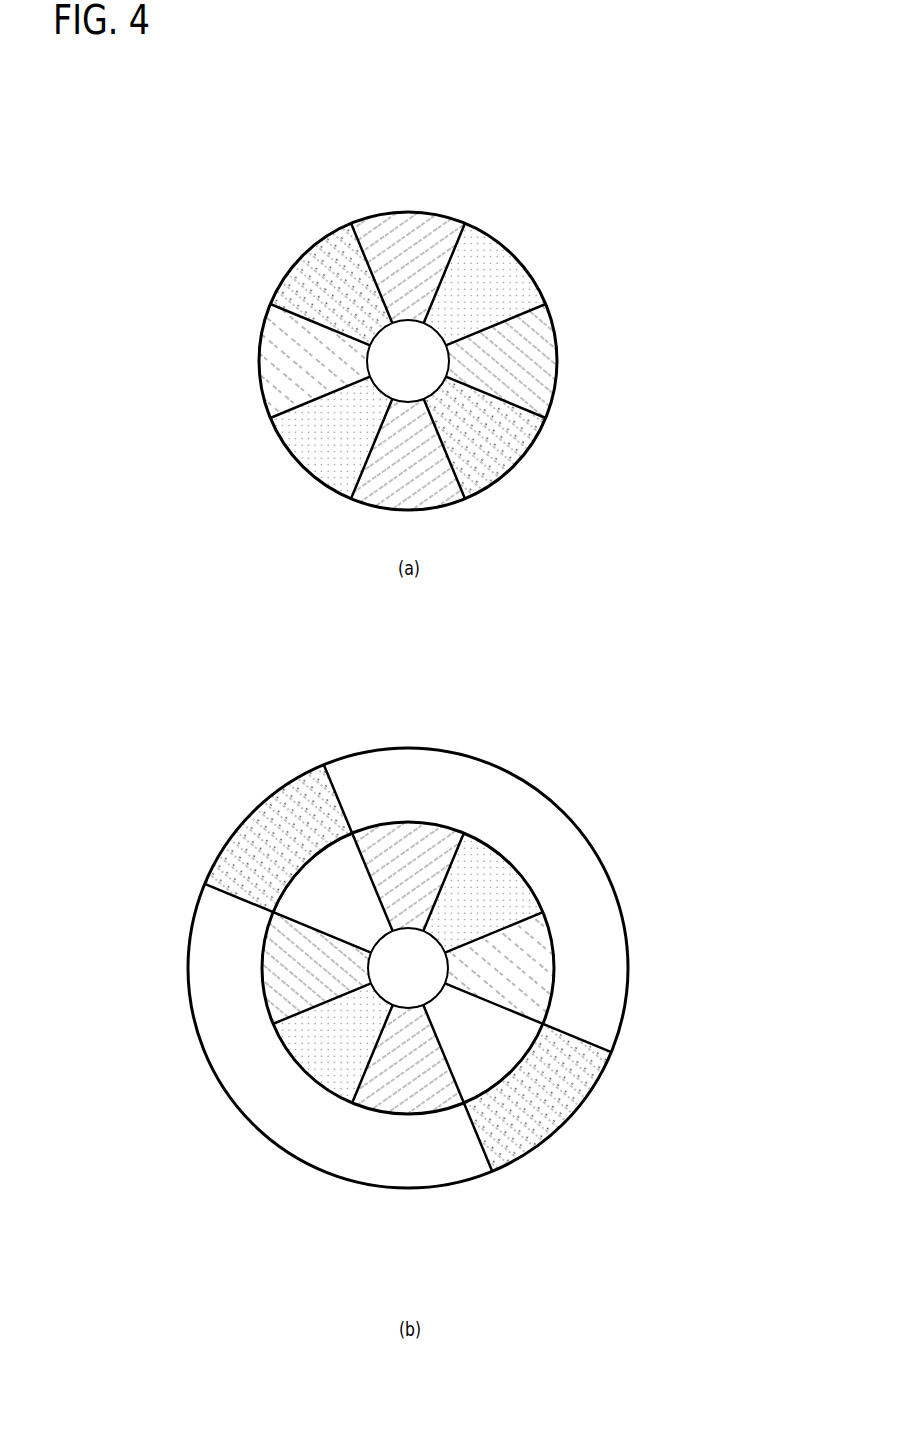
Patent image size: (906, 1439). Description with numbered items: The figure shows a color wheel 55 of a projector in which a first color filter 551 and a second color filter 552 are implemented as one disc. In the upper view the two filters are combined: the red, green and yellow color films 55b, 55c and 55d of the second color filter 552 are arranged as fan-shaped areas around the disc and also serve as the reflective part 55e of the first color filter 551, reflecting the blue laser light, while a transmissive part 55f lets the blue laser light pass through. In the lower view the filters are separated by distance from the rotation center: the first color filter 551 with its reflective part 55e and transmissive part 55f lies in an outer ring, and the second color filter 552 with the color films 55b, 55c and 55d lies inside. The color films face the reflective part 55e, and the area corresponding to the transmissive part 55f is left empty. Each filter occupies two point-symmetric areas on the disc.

The color wheel 55 is at (258, 221).
The color film 55b is at (535, 363).
The color film 55c is at (513, 277).
The color film 55d is at (433, 232).
The reflective part 55e is at (437, 1092).
The transmissive part 55f is at (517, 433).
The first color filter 551 is at (567, 1245).
The second color filter 552 is at (707, 723).